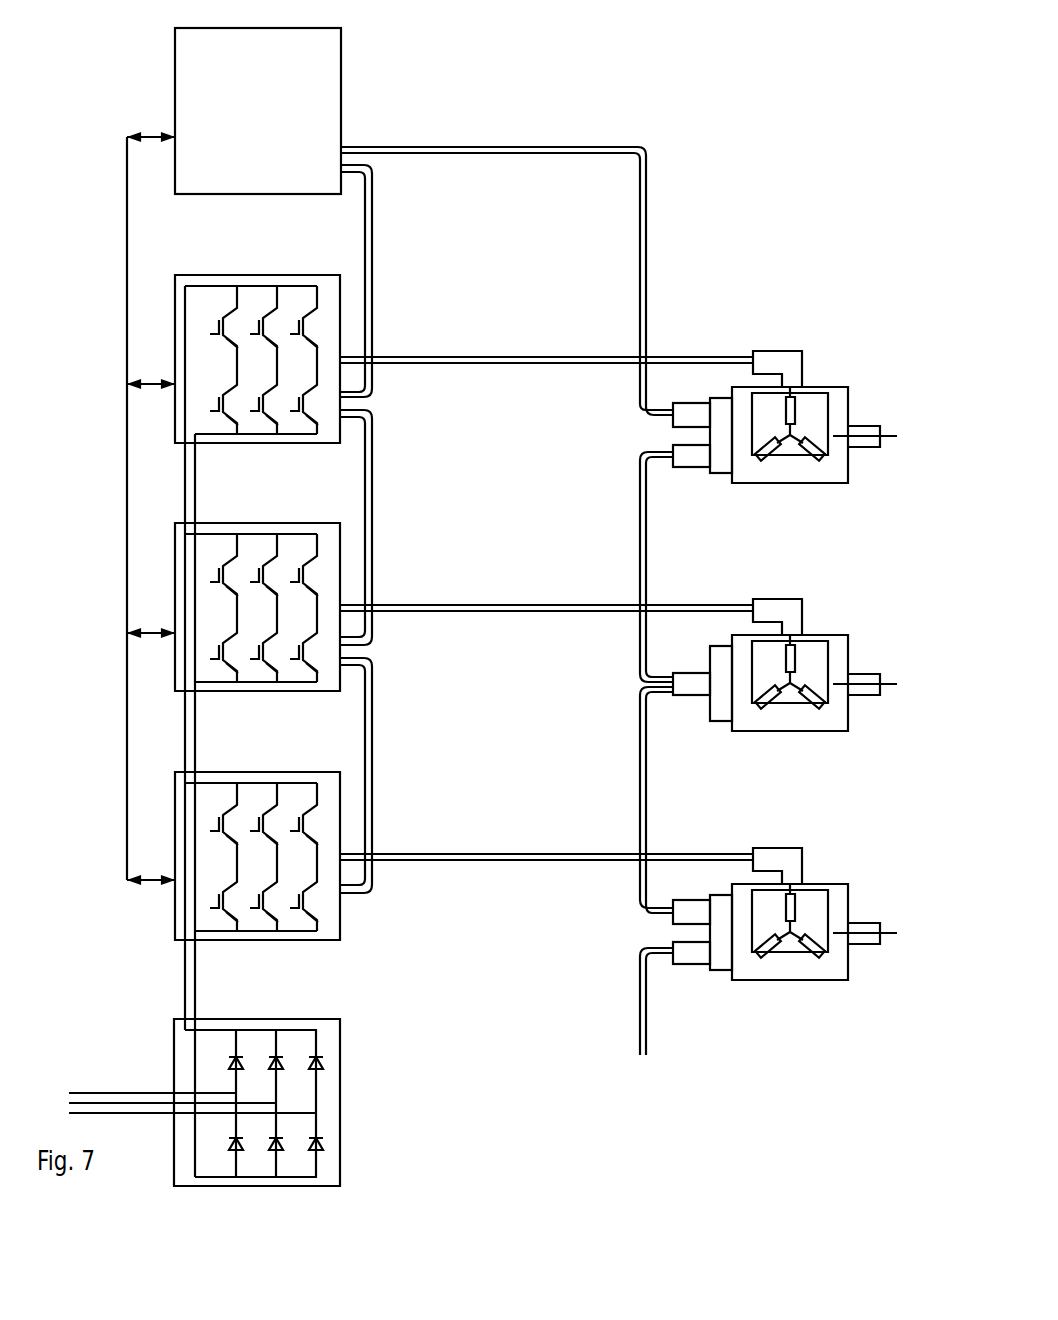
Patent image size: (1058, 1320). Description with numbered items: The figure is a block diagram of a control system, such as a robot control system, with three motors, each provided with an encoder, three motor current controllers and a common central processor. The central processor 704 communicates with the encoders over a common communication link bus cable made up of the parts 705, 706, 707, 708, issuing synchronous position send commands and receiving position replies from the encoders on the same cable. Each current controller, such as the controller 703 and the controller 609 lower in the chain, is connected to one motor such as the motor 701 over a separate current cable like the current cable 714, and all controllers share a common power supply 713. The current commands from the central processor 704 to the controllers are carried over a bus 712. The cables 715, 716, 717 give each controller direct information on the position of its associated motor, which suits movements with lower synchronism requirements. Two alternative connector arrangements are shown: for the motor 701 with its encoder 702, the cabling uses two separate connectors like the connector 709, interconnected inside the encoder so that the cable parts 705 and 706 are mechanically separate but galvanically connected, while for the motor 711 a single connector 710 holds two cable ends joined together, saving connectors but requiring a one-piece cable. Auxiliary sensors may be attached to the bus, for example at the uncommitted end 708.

The inverter module 609 is at (201, 737).
The motor 701 is at (823, 387).
The encoder 702 is at (731, 477).
The motor current controller 703 is at (328, 447).
The central processor 704 is at (343, 62).
The bus cable part 705 is at (637, 277).
The bus cable part 706 is at (639, 540).
The bus cable part 707 is at (639, 785).
The uncommitted cable end 708 is at (639, 1038).
The connector 709 is at (690, 398).
The connector 710 is at (695, 702).
The motor 711 is at (821, 634).
The bus 712 is at (129, 225).
The power supply 713 is at (165, 1093).
The current cable 714 is at (554, 354).
The cable 715 is at (376, 275).
The cable 716 is at (374, 532).
The cable 717 is at (374, 780).